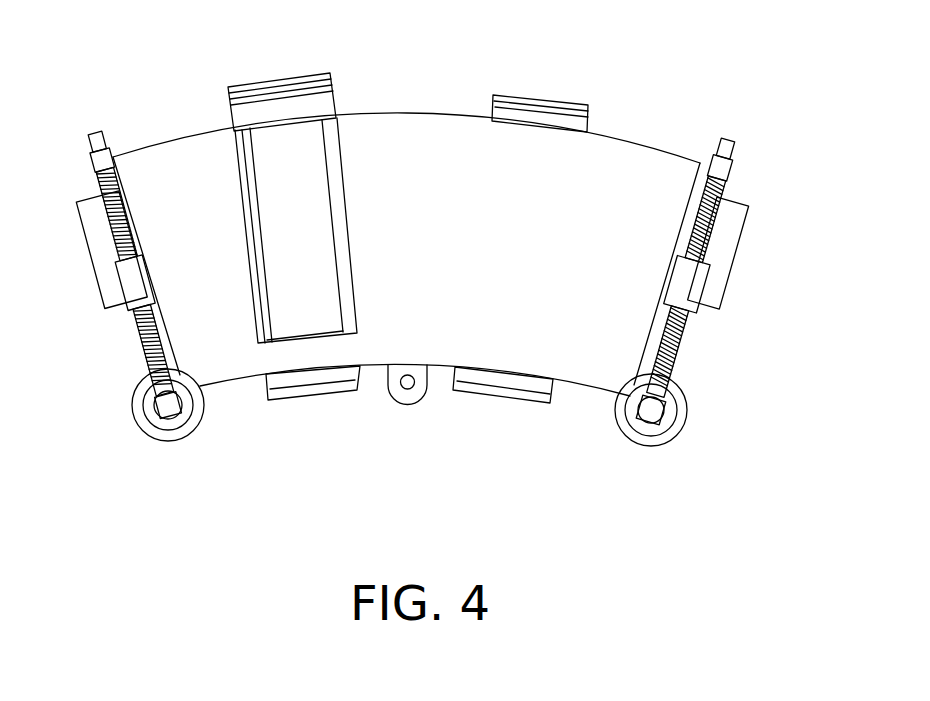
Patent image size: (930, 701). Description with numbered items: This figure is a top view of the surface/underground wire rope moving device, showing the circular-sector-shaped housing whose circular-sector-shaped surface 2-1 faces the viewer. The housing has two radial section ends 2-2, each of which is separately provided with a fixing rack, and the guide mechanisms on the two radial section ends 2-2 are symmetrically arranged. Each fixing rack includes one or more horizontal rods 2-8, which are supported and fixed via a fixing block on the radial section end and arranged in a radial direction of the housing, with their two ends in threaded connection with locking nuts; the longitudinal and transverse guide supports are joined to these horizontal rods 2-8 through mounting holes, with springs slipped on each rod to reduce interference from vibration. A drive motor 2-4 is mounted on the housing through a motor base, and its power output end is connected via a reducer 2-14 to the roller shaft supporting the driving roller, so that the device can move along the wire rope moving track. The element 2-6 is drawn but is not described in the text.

The circular-sector-shaped surface 2-1 is at (557, 178).
The radial section end 2-2 is at (95, 180).
The drive motor 2-4 is at (297, 252).
The roller wheel 2-6 is at (553, 382).
The horizontal rod 2-8 is at (722, 197).
The reducer 2-14 is at (272, 108).